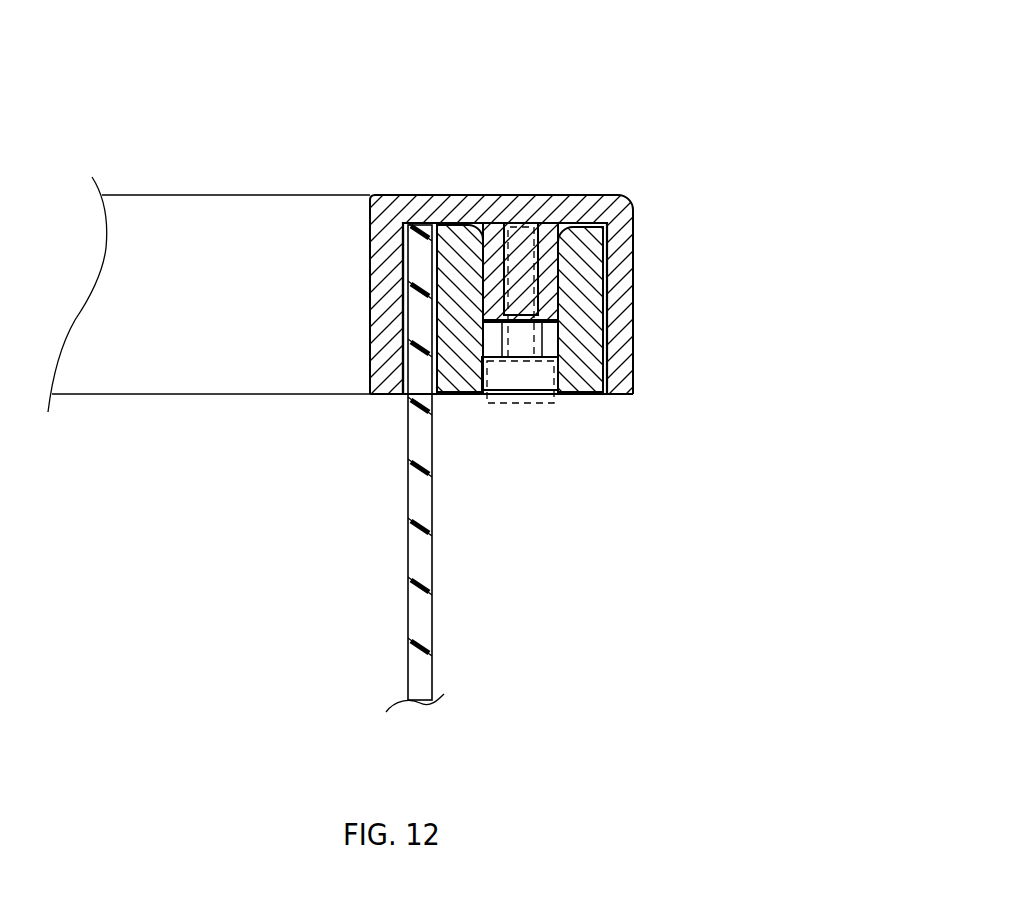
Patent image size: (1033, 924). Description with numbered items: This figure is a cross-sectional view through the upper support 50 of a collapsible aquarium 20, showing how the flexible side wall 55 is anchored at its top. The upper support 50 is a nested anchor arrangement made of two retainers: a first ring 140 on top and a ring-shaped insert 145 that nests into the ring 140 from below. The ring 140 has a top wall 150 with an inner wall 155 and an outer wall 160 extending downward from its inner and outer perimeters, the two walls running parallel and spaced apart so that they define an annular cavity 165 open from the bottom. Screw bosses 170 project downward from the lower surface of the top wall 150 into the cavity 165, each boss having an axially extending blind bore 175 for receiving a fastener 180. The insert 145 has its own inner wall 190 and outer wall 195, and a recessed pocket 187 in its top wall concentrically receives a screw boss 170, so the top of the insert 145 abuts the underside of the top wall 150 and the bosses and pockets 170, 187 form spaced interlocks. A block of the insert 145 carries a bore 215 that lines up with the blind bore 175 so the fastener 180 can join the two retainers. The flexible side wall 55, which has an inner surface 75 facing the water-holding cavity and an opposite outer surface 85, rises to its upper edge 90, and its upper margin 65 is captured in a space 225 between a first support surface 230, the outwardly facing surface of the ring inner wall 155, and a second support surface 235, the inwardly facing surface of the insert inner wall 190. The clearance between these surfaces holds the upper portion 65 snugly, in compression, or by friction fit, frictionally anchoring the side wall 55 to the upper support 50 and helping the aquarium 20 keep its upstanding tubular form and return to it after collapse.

The aquarium 20 is at (757, 141).
The upper support 50 is at (525, 140).
The flexible side wall 55 is at (421, 618).
The upper margin 65 is at (397, 425).
The inner surface 75 is at (407, 543).
The outer surface 85 is at (433, 548).
The upper edge 90 is at (425, 222).
The first ring 140 is at (658, 165).
The insert 145 is at (597, 413).
The top wall 150 is at (598, 201).
The inner wall 155 is at (384, 402).
The outer wall 160 is at (626, 401).
The cavity 165 is at (478, 223).
The screw boss 170 is at (542, 280).
The blind bore 175 is at (548, 301).
The fastener 180 is at (508, 404).
The recessed pocket 187 is at (560, 318).
The inner wall 190 is at (462, 355).
The outer wall 195 is at (593, 338).
The bore 215 is at (545, 352).
The space 225 is at (400, 300).
The first support surface 230 is at (406, 242).
The second support surface 235 is at (440, 325).